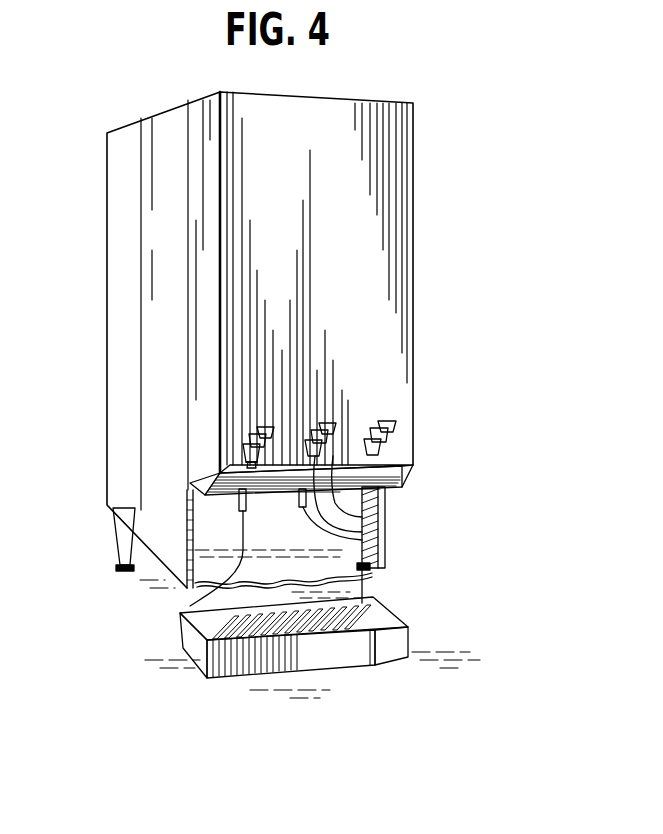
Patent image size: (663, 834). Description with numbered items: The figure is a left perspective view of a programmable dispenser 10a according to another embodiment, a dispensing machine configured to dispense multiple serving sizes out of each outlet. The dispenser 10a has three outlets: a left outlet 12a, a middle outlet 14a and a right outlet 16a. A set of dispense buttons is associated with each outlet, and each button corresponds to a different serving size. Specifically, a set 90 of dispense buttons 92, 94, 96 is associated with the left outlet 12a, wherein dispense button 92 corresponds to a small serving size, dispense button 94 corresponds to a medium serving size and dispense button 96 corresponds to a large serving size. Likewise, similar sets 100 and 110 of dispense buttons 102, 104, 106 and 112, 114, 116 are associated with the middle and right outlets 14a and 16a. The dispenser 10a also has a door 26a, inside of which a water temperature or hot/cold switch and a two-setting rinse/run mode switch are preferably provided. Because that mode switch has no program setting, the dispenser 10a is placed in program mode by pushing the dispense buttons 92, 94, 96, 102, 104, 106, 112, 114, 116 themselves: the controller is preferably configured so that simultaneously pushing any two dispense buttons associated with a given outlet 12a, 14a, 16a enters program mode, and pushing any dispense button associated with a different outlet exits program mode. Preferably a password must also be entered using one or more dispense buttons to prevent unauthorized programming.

The programmable dispenser 10a is at (421, 132).
The door 26a is at (388, 265).
The set of dispense buttons 90 is at (263, 419).
The dispense button 96 is at (251, 434).
The dispense button 94 is at (247, 446).
The dispense button 92 is at (245, 459).
The set of dispense buttons 100 is at (331, 411).
The dispense button 106 is at (336, 428).
The set of dispense buttons 110 is at (395, 415).
The dispense button 116 is at (388, 434).
The dispense button 114 is at (380, 450).
The dispense button 112 is at (397, 467).
The right outlet 16a is at (385, 497).
The dispense button 104 is at (385, 530).
The dispense button 102 is at (385, 552).
The middle outlet 14a is at (395, 538).
The left outlet 12a is at (190, 606).